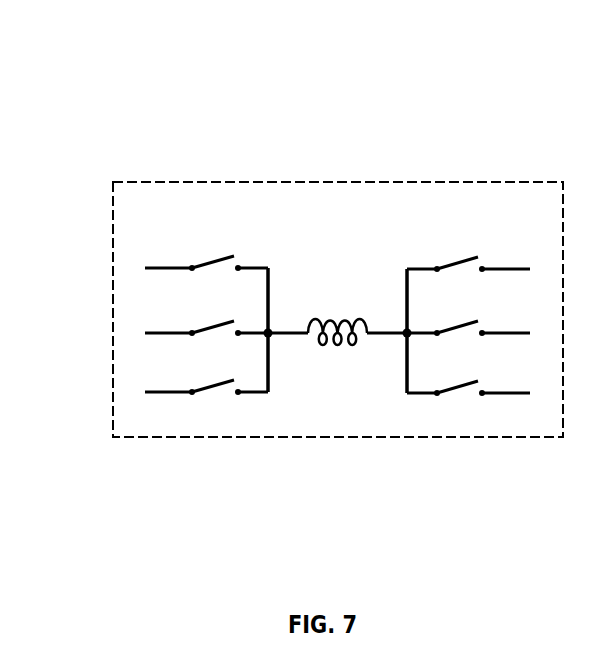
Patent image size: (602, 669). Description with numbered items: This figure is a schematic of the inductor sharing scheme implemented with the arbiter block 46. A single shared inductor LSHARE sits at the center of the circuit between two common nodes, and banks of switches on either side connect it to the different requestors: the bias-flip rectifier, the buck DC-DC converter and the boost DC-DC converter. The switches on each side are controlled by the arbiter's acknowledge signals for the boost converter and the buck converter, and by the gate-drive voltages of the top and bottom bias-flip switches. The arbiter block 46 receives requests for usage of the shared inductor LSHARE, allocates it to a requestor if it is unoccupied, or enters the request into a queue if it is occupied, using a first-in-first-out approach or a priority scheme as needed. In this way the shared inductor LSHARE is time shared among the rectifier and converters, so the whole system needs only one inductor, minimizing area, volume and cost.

The arbiter block 46 is at (72, 79).
The shared inductor LSHARE is at (298, 282).